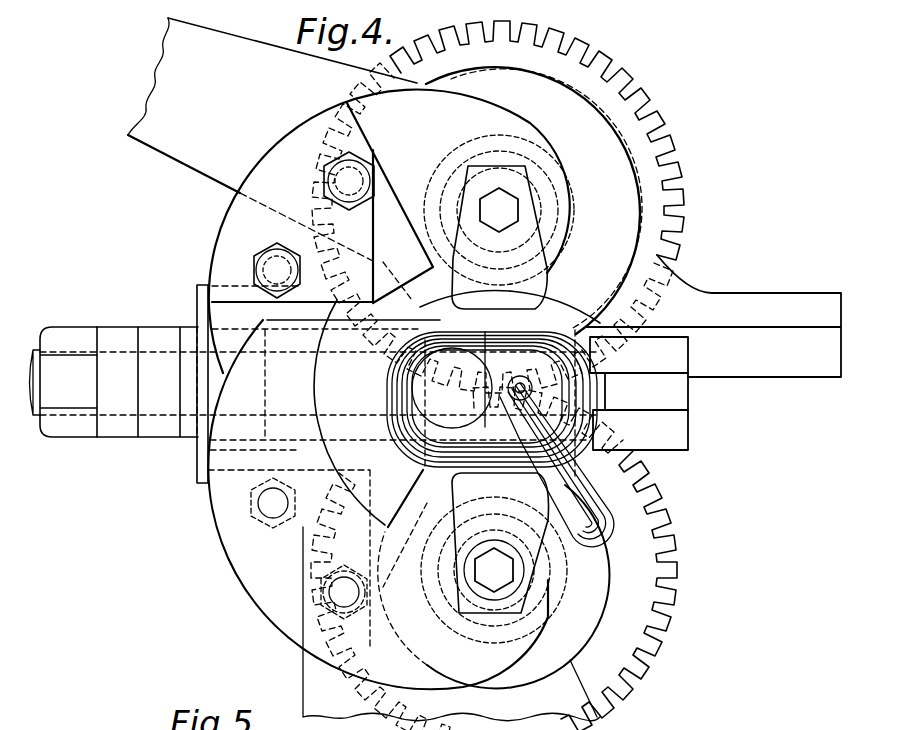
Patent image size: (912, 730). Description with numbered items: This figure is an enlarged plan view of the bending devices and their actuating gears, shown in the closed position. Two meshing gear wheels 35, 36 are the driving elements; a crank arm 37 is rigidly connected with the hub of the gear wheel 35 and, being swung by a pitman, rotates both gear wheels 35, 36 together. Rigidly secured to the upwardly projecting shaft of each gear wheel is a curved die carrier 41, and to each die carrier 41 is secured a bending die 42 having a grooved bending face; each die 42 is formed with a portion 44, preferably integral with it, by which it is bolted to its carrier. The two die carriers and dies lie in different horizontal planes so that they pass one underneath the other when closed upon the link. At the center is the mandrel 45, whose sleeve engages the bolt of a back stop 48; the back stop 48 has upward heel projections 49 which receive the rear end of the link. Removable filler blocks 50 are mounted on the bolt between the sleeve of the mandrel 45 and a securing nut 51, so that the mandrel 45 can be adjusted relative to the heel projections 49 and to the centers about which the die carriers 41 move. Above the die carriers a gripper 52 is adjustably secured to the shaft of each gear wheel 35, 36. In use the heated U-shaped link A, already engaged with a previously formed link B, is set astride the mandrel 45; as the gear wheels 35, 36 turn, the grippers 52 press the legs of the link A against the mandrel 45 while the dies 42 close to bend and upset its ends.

The gear wheel 35 is at (660, 176).
The gear wheel 36 is at (657, 604).
The crank arm 37 is at (272, 140).
The die carrier 41 is at (220, 252).
The bending die 42 is at (404, 376).
The portion 44 is at (307, 385).
The mandrel 45 is at (500, 438).
The back stop 48 is at (646, 391).
The upward projections 49 is at (639, 393).
The filler blocks 50 is at (187, 433).
The securing nut 51 is at (82, 428).
The gripper 52 is at (548, 281).
The link A is at (440, 320).
The previously formed link B is at (621, 522).